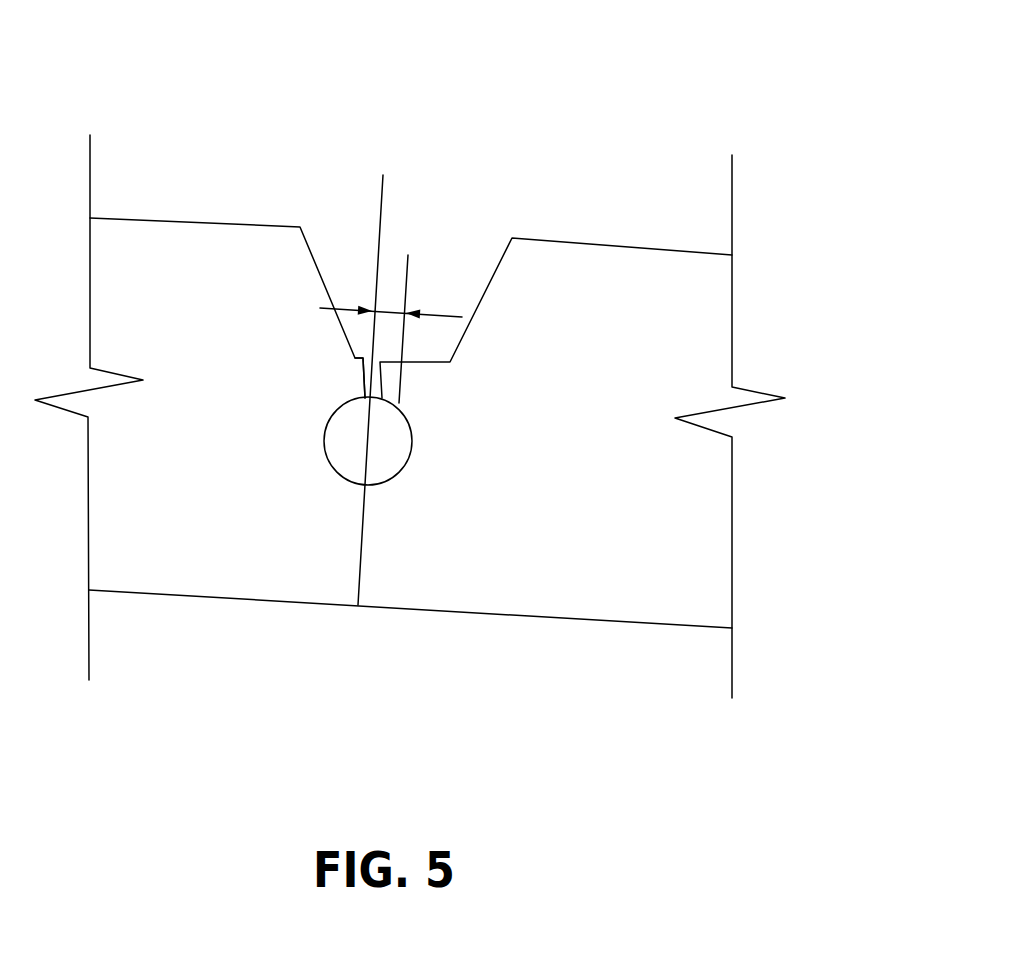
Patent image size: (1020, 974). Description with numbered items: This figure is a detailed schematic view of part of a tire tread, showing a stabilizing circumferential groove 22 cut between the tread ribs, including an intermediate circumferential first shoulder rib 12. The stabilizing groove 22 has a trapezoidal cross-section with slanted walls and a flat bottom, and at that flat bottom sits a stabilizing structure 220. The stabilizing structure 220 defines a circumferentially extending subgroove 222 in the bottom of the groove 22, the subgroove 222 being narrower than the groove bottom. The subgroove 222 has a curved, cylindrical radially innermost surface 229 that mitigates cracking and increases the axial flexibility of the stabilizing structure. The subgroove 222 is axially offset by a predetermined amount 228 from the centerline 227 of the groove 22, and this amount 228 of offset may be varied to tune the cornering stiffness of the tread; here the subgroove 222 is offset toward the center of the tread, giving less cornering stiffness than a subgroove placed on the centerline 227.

The intermediate circumferential first shoulder rib 12 is at (588, 240).
The stabilizing circumferential groove 22 is at (388, 272).
The stabilizing structure 220 is at (386, 492).
The subgroove 222 is at (350, 387).
The centerline 227 is at (410, 377).
The predetermined amount 228 is at (390, 310).
The curved, cylindrical radially innermost surface 229 is at (397, 458).